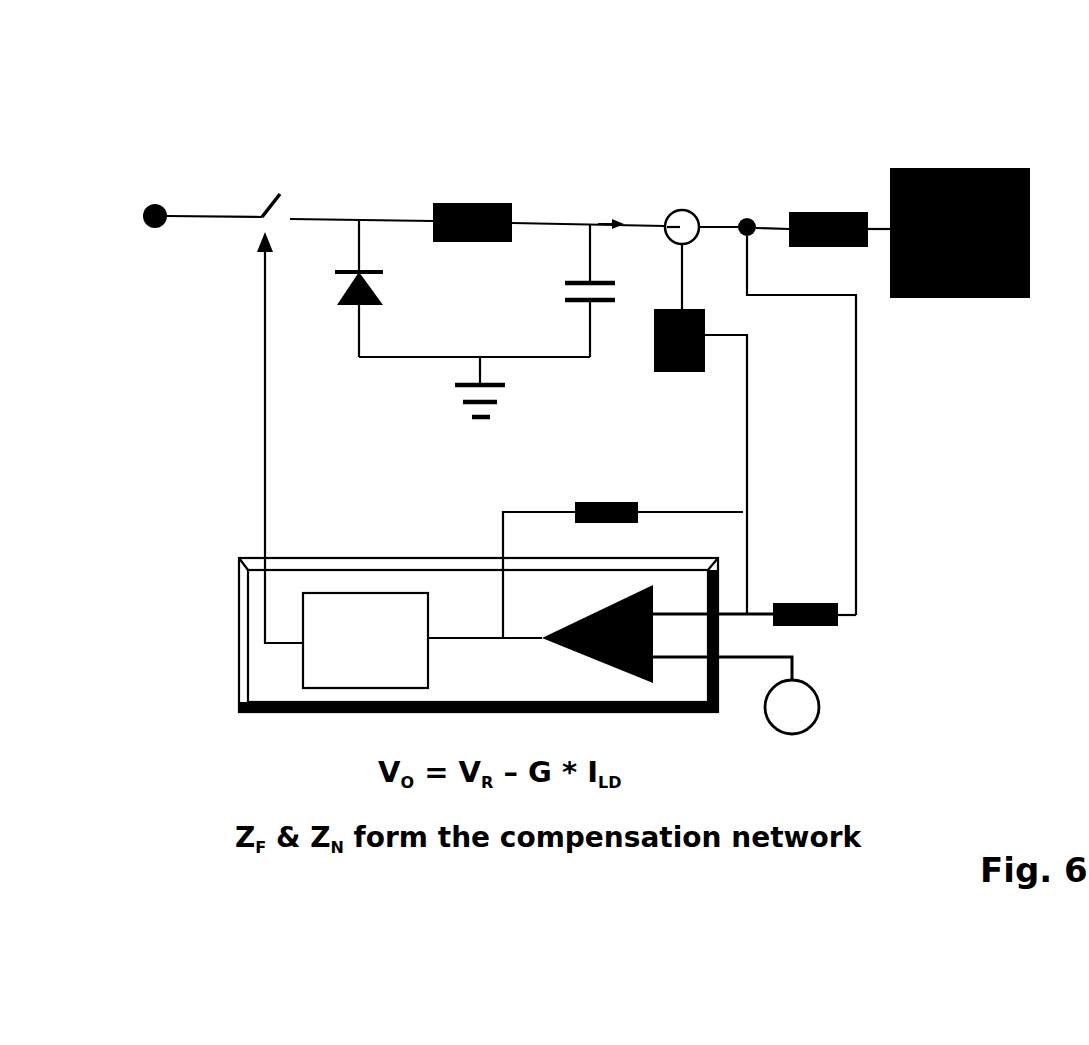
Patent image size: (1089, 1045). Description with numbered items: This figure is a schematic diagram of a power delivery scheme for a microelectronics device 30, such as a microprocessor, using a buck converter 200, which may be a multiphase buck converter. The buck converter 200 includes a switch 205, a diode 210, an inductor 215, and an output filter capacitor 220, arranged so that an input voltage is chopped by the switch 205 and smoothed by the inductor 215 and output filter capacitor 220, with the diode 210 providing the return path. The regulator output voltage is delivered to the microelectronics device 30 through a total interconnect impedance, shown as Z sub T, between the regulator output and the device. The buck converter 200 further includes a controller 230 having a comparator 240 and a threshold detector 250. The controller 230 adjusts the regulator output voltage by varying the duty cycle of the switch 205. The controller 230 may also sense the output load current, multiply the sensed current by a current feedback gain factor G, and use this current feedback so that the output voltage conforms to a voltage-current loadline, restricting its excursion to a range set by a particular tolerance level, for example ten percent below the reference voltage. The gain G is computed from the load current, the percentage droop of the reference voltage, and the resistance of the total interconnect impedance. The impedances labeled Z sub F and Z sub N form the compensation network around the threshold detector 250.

The buck converter 200 is at (806, 88).
The switch 205 is at (279, 196).
The inductor 215 is at (490, 204).
The diode 210 is at (347, 307).
The output filter capacitor 220 is at (576, 300).
The controller 230 is at (234, 633).
The comparator 240 is at (303, 678).
The threshold detector 250 is at (584, 658).
The microelectronics device 30 is at (925, 298).